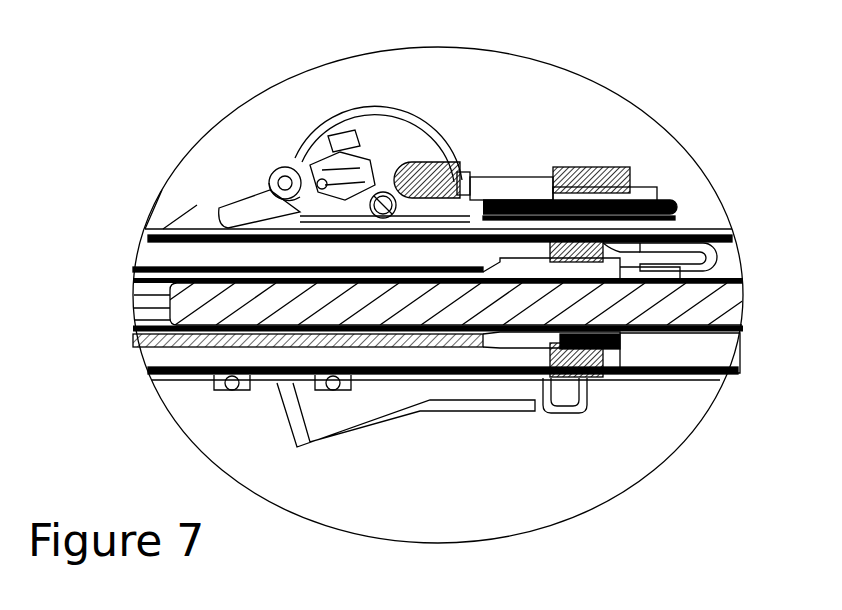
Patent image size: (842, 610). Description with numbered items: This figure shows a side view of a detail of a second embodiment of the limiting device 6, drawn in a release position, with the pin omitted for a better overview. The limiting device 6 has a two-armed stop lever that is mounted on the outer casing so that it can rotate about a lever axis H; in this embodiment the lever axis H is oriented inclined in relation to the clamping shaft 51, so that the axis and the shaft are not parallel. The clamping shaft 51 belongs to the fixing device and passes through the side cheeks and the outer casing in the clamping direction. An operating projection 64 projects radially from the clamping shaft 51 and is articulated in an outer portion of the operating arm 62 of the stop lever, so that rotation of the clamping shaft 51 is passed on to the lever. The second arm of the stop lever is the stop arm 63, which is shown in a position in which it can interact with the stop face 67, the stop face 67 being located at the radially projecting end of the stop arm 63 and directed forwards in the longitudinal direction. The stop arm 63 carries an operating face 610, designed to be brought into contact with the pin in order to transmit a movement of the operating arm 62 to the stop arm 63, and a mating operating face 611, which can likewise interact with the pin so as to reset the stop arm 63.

The stop face 67 is at (197, 205).
The stop arm 63 is at (252, 205).
The lever axis H is at (271, 175).
The limiting device 6 is at (276, 154).
The operating arm 62 is at (337, 175).
The operating face 610 is at (322, 180).
The mating operating face 611 is at (320, 190).
The operating projection 64 is at (405, 140).
The clamping shaft 51 is at (470, 172).